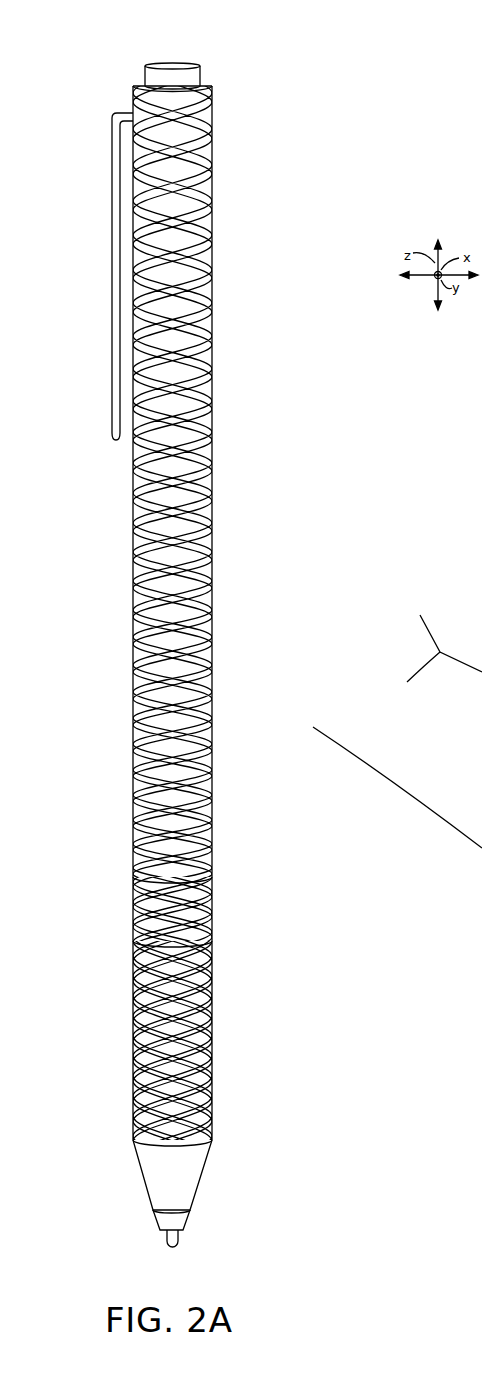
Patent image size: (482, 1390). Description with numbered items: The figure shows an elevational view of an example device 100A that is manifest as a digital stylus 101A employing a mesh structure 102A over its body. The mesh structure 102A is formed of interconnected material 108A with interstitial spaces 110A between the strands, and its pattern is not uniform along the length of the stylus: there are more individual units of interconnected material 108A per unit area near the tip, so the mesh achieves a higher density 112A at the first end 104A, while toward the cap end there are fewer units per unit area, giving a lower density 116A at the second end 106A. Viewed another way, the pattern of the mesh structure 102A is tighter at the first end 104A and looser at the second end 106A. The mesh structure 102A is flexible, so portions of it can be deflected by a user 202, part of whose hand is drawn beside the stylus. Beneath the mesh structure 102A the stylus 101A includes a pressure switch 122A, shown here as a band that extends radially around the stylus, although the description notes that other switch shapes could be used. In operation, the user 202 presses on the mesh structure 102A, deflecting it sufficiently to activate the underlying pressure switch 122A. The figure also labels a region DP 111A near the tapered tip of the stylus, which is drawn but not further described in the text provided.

The device 100A is at (191, 31).
The digital stylus 101A is at (250, 1276).
The mesh structure 102A is at (221, 384).
The first end 104A is at (222, 1137).
The second end 106A is at (219, 95).
The interconnected material 108A is at (209, 491).
The interstitial spaces 110A is at (210, 530).
The DP 111A is at (114, 1147).
The higher density 112A is at (228, 1121).
The lower density 116A is at (230, 151).
The pressure switch 122A is at (232, 873).
The user 202 is at (481, 741).